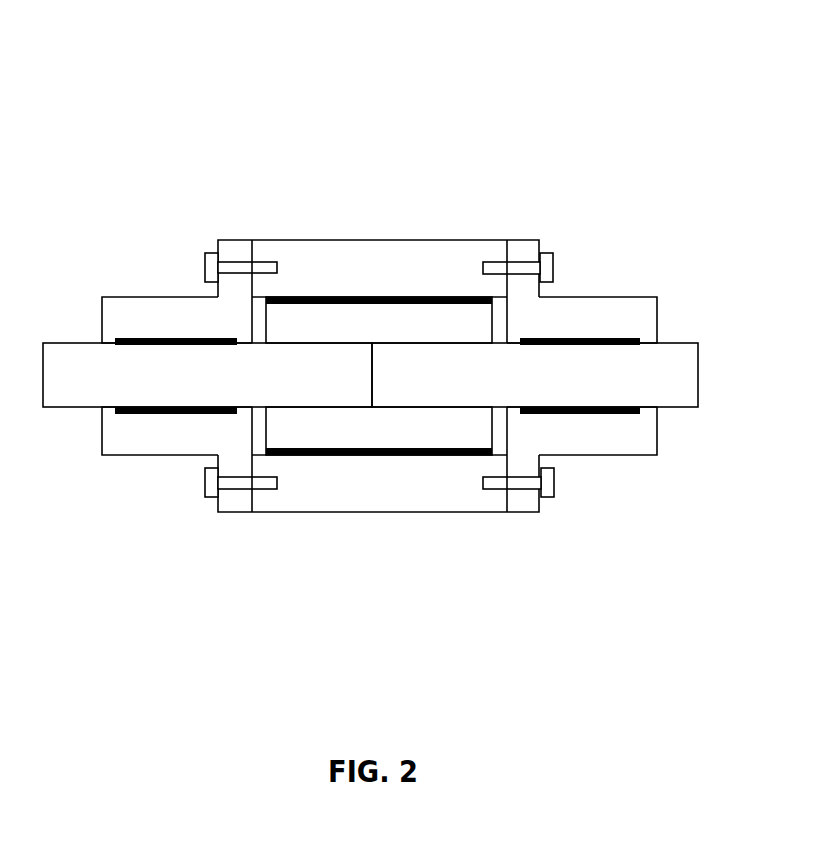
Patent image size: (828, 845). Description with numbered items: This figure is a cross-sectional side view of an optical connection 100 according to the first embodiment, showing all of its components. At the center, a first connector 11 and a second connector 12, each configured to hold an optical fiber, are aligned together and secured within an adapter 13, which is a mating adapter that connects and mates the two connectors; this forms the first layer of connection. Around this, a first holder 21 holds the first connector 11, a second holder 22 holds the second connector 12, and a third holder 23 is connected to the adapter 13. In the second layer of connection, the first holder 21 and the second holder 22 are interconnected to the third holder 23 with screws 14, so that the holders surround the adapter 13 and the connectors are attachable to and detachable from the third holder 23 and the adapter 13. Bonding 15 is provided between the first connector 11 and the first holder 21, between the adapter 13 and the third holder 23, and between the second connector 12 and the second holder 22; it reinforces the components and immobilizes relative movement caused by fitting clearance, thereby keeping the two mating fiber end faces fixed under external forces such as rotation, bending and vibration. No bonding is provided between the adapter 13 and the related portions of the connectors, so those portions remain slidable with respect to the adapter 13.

The optical connection 100 is at (377, 80).
The first connector 11 is at (207, 375).
The second connector 12 is at (535, 375).
The adapter 13 is at (379, 376).
The screw 14 is at (191, 260).
The bonding 15 is at (142, 424).
The first holder 21 is at (177, 376).
The second holder 22 is at (582, 376).
The third holder 23 is at (378, 376).